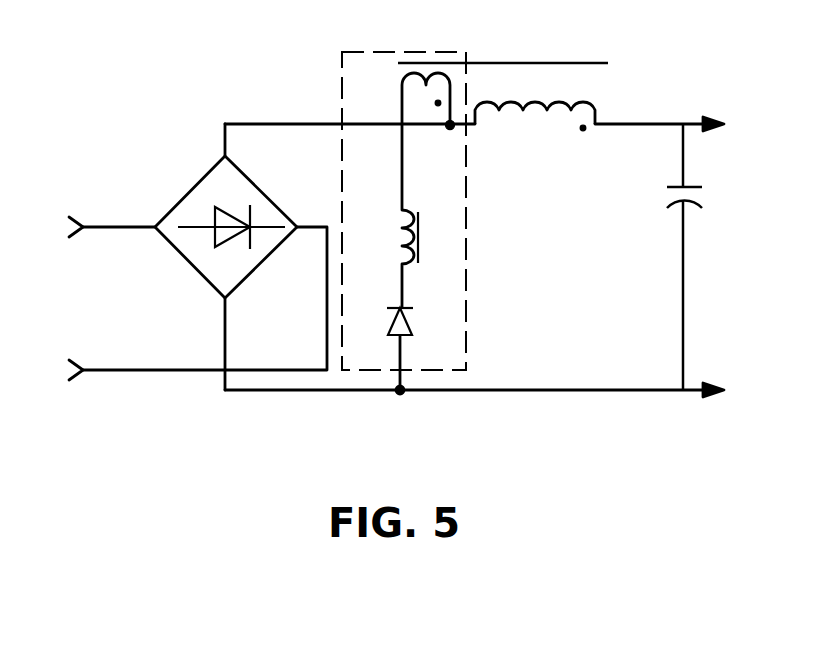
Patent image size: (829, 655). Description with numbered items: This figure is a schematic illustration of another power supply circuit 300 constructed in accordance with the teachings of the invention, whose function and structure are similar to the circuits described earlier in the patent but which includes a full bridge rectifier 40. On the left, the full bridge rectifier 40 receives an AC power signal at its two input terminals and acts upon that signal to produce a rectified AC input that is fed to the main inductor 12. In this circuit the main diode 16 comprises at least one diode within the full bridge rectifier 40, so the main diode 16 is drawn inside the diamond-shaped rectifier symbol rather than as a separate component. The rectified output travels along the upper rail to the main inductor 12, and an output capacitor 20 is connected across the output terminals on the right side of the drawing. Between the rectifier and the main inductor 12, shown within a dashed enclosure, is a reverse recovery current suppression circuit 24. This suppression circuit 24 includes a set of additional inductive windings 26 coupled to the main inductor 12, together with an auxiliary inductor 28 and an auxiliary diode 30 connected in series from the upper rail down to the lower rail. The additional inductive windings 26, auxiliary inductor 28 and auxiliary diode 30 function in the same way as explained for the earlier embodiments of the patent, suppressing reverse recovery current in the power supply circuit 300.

The power supply circuit 300 is at (200, 434).
The full bridge rectifier 40 is at (158, 200).
The main diode 16 is at (222, 203).
The reverse recovery current suppression circuit 24 is at (467, 350).
The additional inductive windings 26 is at (412, 74).
The main inductor 12 is at (548, 111).
The auxiliary inductor 28 is at (420, 213).
The auxiliary diode 30 is at (410, 320).
The output capacitor 20 is at (667, 195).